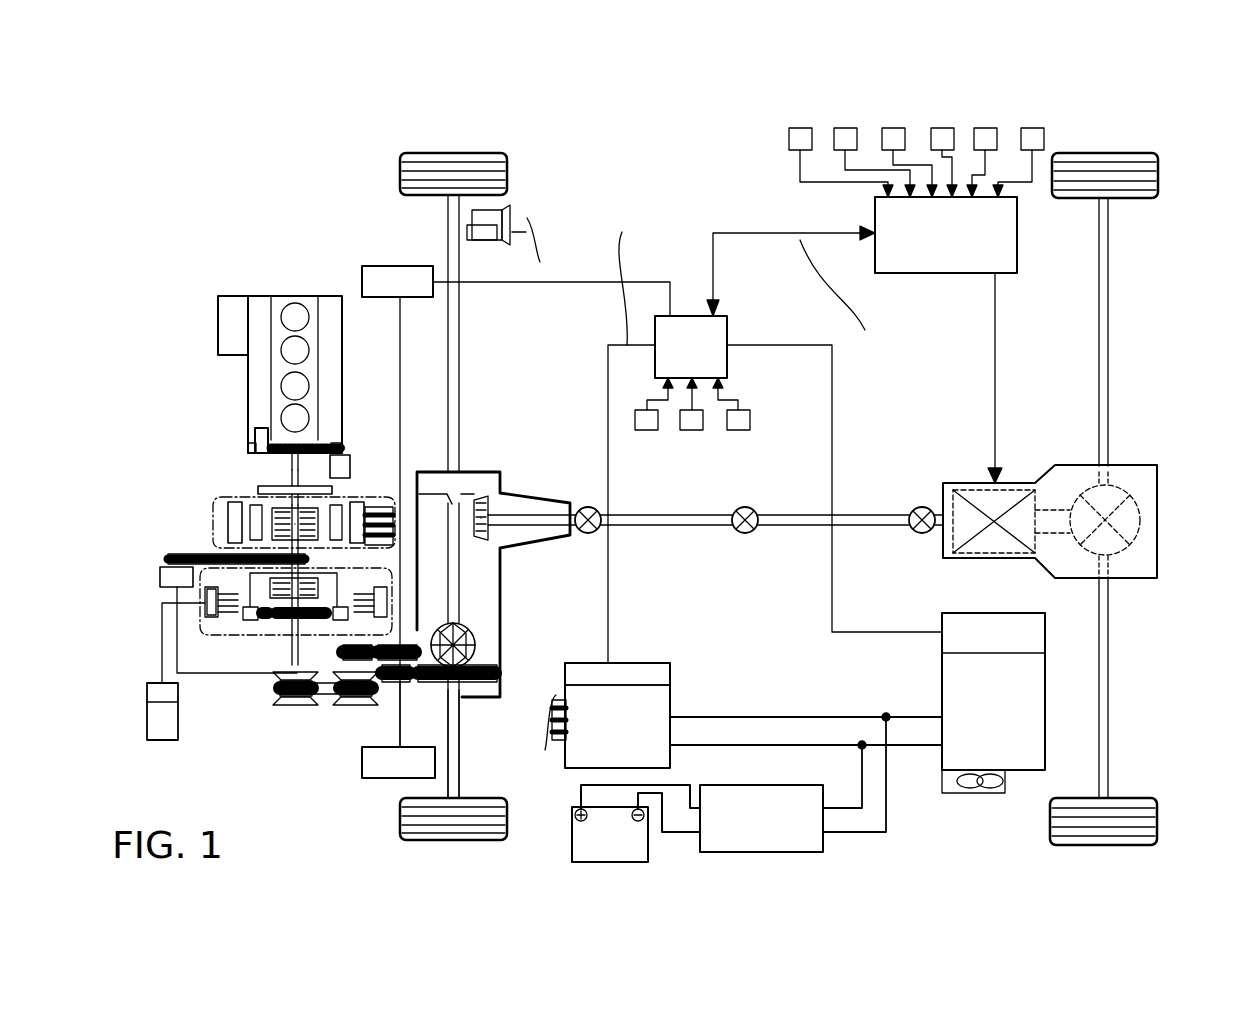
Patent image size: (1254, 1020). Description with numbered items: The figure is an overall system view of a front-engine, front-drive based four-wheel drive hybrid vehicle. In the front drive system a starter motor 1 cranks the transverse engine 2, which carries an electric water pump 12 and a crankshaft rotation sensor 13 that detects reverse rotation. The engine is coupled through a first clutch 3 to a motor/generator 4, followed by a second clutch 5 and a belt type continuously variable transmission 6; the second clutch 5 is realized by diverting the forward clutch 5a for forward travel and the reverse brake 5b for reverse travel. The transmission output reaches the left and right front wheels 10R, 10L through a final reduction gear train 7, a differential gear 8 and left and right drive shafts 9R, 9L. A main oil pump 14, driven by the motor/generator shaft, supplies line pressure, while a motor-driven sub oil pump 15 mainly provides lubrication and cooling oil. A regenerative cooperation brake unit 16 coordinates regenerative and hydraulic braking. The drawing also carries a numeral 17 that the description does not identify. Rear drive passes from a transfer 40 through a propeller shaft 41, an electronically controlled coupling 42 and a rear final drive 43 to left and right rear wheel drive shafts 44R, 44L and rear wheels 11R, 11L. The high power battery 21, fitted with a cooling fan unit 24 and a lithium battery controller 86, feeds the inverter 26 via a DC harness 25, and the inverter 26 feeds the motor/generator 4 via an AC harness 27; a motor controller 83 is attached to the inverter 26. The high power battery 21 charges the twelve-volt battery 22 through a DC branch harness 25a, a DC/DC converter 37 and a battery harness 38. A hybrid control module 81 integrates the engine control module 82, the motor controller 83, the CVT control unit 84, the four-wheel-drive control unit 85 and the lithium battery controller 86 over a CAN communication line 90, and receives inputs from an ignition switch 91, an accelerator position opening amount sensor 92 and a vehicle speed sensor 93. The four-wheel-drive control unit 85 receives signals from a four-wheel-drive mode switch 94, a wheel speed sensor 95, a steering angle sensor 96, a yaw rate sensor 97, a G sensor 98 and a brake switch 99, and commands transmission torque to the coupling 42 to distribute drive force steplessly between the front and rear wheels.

The starter motor 1 is at (343, 467).
The transverse engine 2 is at (311, 303).
The first clutch 3 is at (283, 512).
The motor/generator 4 is at (235, 521).
The second clutch 5 is at (212, 625).
The forward clutch 5a is at (292, 616).
The reverse brake 5b is at (228, 625).
The belt type continuously variable transmission 6 is at (296, 705).
The final reduction gear train 7 is at (408, 683).
The differential gear 8 is at (466, 638).
The right drive shaft 9R is at (460, 318).
The left drive shaft 9L is at (460, 756).
The right front wheel 10R is at (400, 173).
The left front wheel 10L is at (400, 818).
The right rear wheel 11R is at (1158, 172).
The left rear wheel 11L is at (1157, 815).
The electric water pump 12 is at (228, 303).
The crankshaft rotation sensor 13 is at (258, 442).
The main oil pump 14 is at (172, 576).
The sub oil pump 15 is at (163, 717).
The regenerative cooperation brake unit 16 is at (508, 216).
The damper 17 is at (280, 489).
The high power battery 21 is at (1037, 676).
The 12V battery 22 is at (572, 836).
The cooling fan unit 24 is at (975, 787).
The DC harness 25 is at (718, 725).
The DC branch harness 25a is at (886, 818).
The inverter 26 is at (632, 663).
The AC harness 27 is at (378, 507).
The DC/DC converter 37 is at (755, 785).
The battery harness 38 is at (650, 783).
The transfer 40 is at (542, 500).
The propeller shaft 41 is at (690, 527).
The electronically controlled coupling 42 is at (962, 490).
The rear final drive 43 is at (1120, 490).
The right rear wheel drive shaft 44R is at (1109, 320).
The left rear wheel drive shaft 44L is at (1109, 688).
The hybrid control module 81 is at (695, 316).
The engine control module 82 is at (392, 266).
The motor controller 83 is at (583, 663).
The CVT control unit 84 is at (362, 763).
The 4WD control unit 85 is at (1017, 238).
The lithium battery controller 86 is at (1033, 631).
The CAN communication line 90 is at (749, 275).
The ignition switch 91 is at (645, 430).
The accelerator position opening amount sensor 92 is at (690, 430).
The vehicle speed sensor 93 is at (737, 430).
The 4WD mode switch 94 is at (800, 128).
The wheel speed sensor 95 is at (845, 128).
The steering angle sensor 96 is at (893, 128).
The yaw rate sensor 97 is at (942, 128).
The G sensor 98 is at (985, 128).
The brake switch 99 is at (1032, 128).